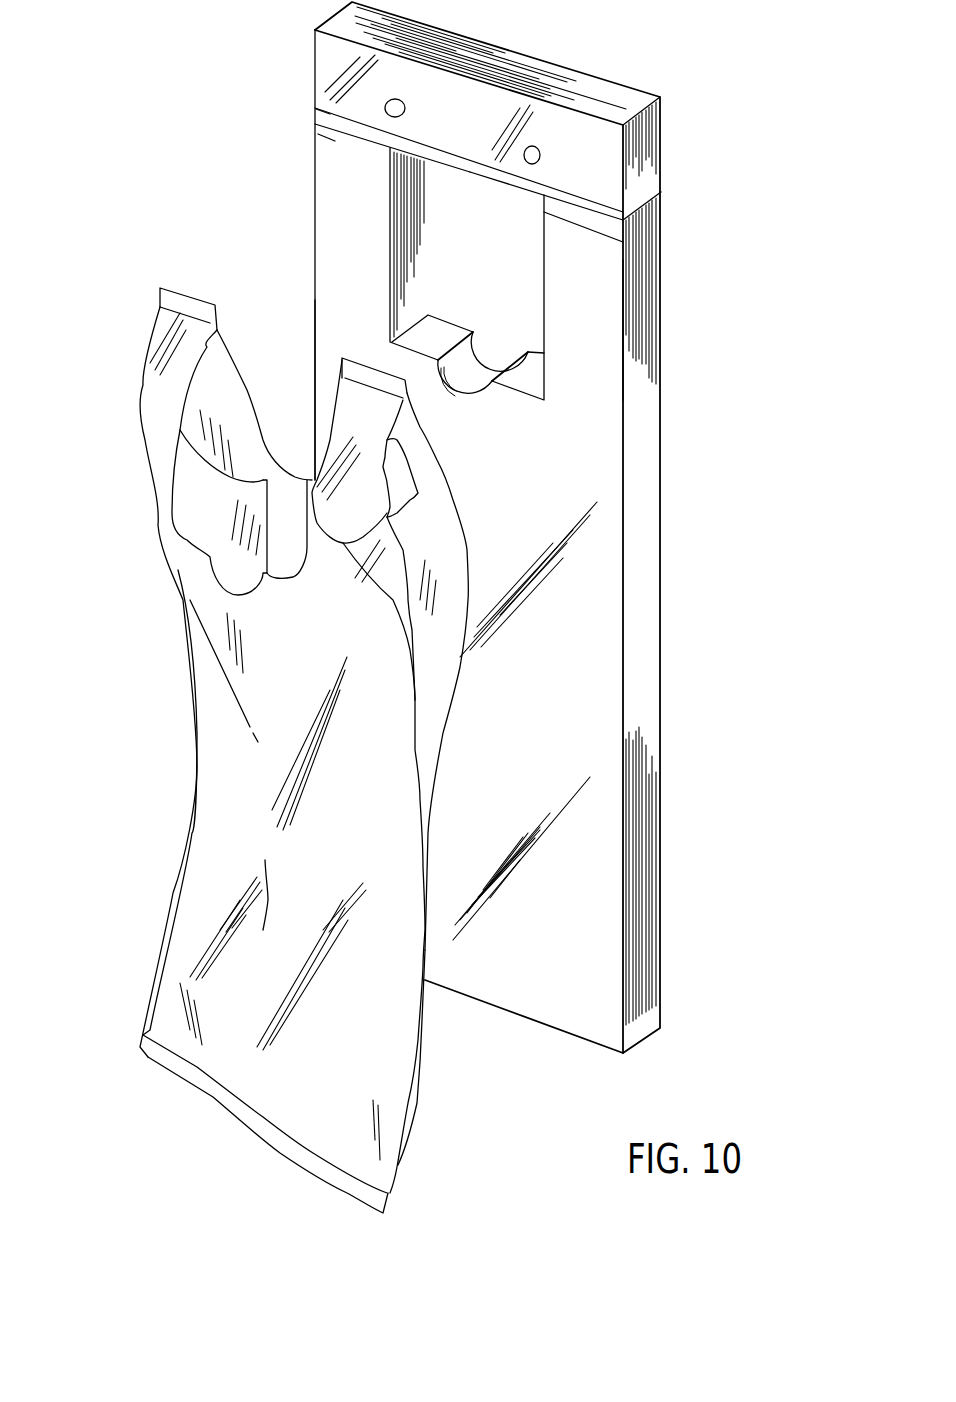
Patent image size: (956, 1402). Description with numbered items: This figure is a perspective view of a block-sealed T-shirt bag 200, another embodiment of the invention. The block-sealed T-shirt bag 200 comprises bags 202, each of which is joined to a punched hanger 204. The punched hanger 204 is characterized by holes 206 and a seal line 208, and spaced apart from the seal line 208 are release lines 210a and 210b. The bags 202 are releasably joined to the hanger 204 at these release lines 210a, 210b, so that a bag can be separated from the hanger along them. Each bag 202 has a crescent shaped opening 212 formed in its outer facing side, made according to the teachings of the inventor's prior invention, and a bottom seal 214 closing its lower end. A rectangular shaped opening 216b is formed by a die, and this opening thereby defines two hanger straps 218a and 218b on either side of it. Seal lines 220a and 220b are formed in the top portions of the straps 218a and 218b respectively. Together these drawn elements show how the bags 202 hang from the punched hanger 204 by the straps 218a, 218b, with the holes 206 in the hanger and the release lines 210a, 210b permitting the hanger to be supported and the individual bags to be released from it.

The block-sealed T-shirt bag 200 is at (155, 833).
The bag 202 is at (662, 328).
The punched hanger 204 is at (597, 66).
The holes 206 is at (531, 146).
The seal line 208 is at (316, 109).
The release line 210a is at (316, 124).
The release line 210b is at (648, 205).
The crescent shaped opening 212 is at (460, 392).
The bottom seal 214 is at (397, 1193).
The rectangular shaped opening 216b is at (497, 274).
The hanger strap 218a is at (373, 249).
The hanger strap 218b is at (591, 330).
The seal line 220a is at (317, 133).
The seal line 220b is at (623, 242).